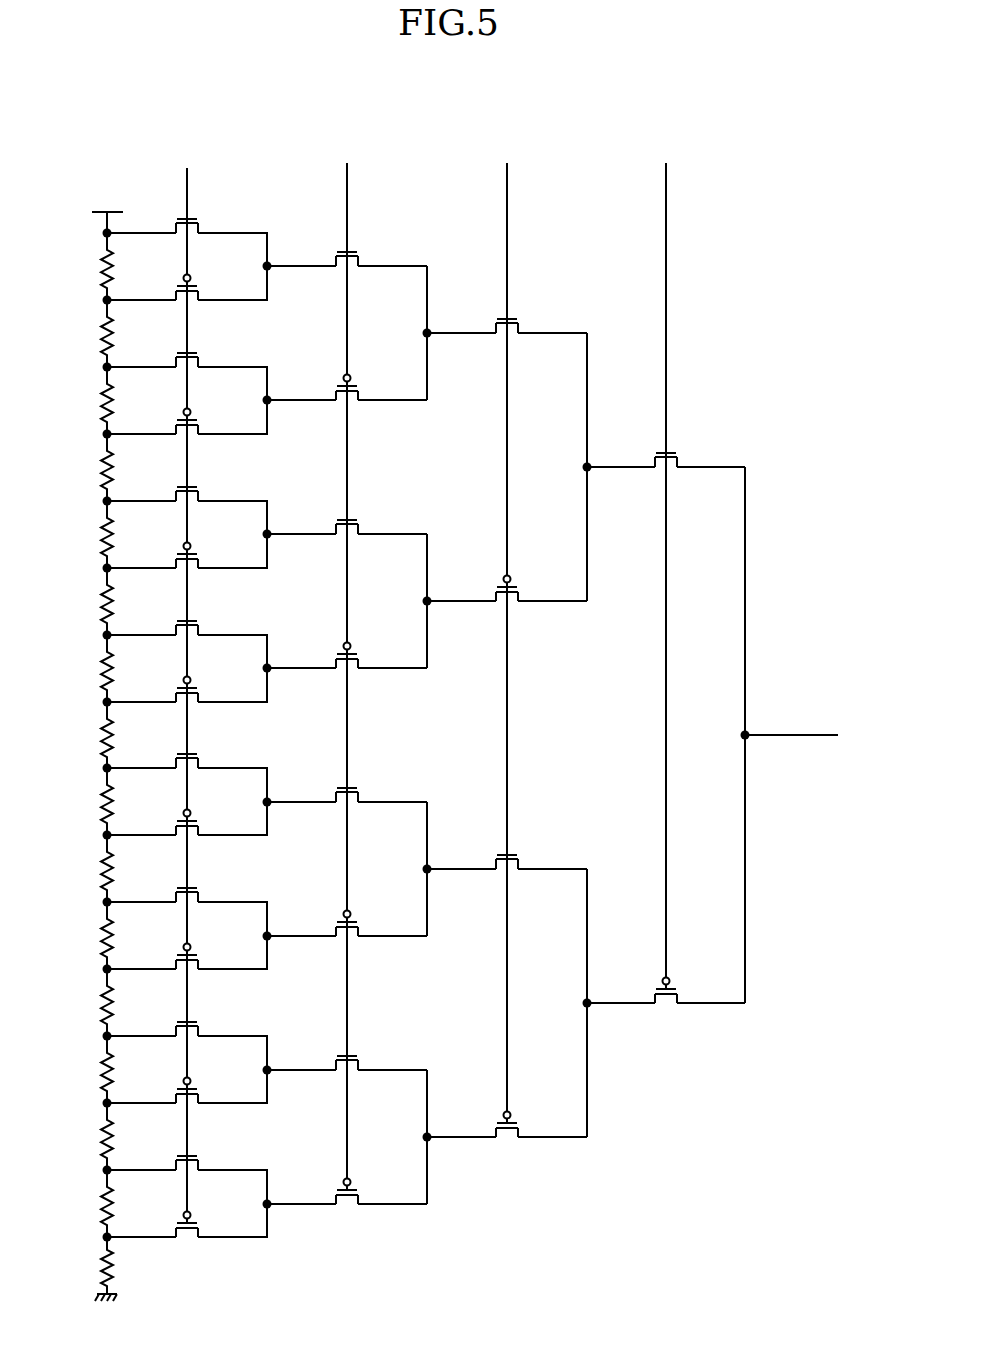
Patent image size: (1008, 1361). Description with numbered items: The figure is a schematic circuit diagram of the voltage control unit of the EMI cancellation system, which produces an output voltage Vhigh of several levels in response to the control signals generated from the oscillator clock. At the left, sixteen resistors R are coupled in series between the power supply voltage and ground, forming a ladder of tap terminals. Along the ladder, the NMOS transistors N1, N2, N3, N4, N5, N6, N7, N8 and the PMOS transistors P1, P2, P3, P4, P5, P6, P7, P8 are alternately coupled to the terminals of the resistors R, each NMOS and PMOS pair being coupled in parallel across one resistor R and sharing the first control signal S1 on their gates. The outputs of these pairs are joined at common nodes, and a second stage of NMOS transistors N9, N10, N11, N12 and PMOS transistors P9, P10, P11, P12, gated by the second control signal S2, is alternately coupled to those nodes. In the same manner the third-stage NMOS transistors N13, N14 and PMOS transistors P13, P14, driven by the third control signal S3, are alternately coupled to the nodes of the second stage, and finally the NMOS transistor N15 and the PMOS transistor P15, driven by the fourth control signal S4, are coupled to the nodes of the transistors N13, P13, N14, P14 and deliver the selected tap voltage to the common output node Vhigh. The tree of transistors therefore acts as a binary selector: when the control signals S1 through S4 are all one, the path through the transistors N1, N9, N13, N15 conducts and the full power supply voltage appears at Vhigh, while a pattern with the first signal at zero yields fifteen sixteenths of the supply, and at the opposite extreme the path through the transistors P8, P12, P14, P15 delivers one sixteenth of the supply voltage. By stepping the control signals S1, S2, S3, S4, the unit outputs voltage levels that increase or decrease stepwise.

The resistor R is at (94, 756).
The control signal S1 is at (191, 678).
The control signal S2 is at (351, 662).
The control signal S3 is at (511, 628).
The control signal S4 is at (670, 561).
The output voltage Vhigh is at (822, 739).
The NMOS transistor N1 is at (204, 218).
The PMOS transistor P1 is at (202, 285).
The NMOS transistor N2 is at (204, 352).
The PMOS transistor P2 is at (202, 419).
The NMOS transistor N3 is at (204, 486).
The PMOS transistor P3 is at (202, 553).
The NMOS transistor N4 is at (204, 620).
The PMOS transistor P4 is at (202, 687).
The NMOS transistor N5 is at (204, 753).
The PMOS transistor P5 is at (202, 820).
The NMOS transistor N6 is at (204, 887).
The PMOS transistor P6 is at (202, 954).
The NMOS transistor N7 is at (204, 1021).
The PMOS transistor P7 is at (202, 1088).
The NMOS transistor N8 is at (204, 1155).
The PMOS transistor P8 is at (202, 1222).
The NMOS transistor N9 is at (364, 251).
The PMOS transistor P9 is at (362, 385).
The NMOS transistor N10 is at (369, 519).
The PMOS transistor P10 is at (368, 653).
The NMOS transistor N11 is at (369, 787).
The PMOS transistor P11 is at (368, 921).
The NMOS transistor N12 is at (369, 1055).
The PMOS transistor P12 is at (368, 1189).
The NMOS transistor N13 is at (529, 318).
The PMOS transistor P13 is at (528, 586).
The NMOS transistor N14 is at (529, 854).
The PMOS transistor P14 is at (528, 1122).
The NMOS transistor N15 is at (688, 452).
The PMOS transistor P15 is at (687, 988).